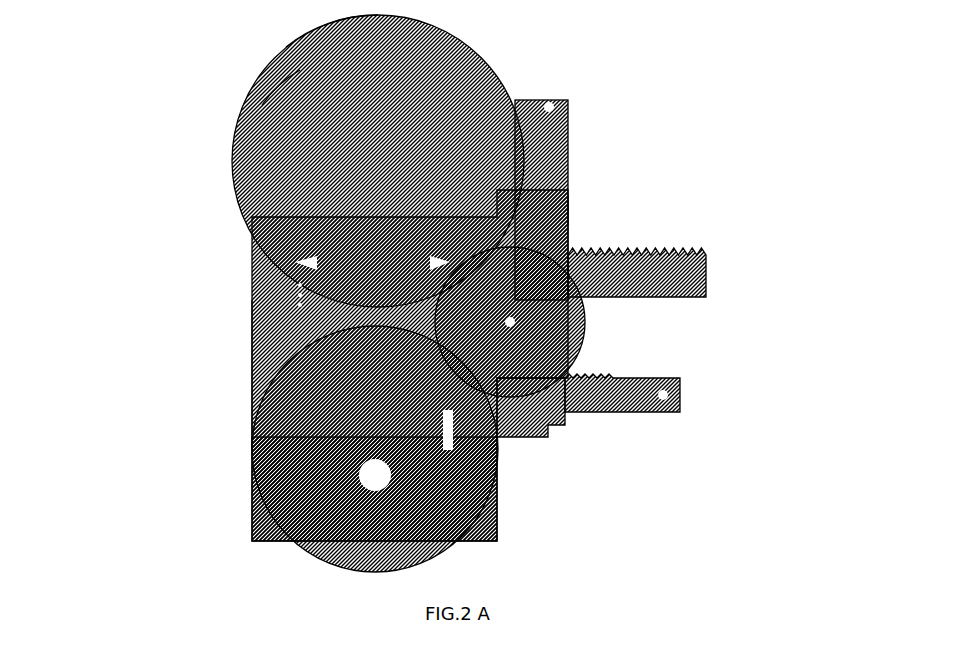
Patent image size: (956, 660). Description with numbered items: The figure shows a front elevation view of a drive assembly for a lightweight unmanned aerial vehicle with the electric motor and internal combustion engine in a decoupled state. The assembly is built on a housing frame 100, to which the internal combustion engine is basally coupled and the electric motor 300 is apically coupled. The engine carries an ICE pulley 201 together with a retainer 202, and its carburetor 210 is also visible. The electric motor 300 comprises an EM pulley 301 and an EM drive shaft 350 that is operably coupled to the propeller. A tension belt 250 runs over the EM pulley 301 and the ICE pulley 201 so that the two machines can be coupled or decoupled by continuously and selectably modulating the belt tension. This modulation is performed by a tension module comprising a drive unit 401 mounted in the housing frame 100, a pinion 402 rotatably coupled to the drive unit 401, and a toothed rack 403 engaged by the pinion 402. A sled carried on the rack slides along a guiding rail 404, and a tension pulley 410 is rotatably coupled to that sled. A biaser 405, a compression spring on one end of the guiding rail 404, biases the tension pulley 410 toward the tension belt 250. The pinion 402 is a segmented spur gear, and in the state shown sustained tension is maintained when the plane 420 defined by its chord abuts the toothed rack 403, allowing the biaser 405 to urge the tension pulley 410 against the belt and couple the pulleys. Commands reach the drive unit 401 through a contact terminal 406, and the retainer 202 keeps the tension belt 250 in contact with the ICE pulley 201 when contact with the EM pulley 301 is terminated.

The housing frame 100 is at (252, 260).
The ICE pulley 201 is at (310, 497).
The retainer 202 is at (300, 541).
The carburetor 210 is at (252, 372).
The tension belt 250 is at (252, 275).
The electric motor 300 is at (253, 85).
The EM pulley 301 is at (286, 47).
The EM drive shaft 350 is at (262, 105).
The drive unit 401 is at (568, 177).
The pinion 402 is at (568, 208).
The toothed rack 403 is at (708, 271).
The guiding rail 404 is at (683, 383).
The biaser 405 is at (627, 413).
The contact terminal 406 is at (552, 102).
The tension pulley 410 is at (528, 438).
The plane 420 is at (568, 240).